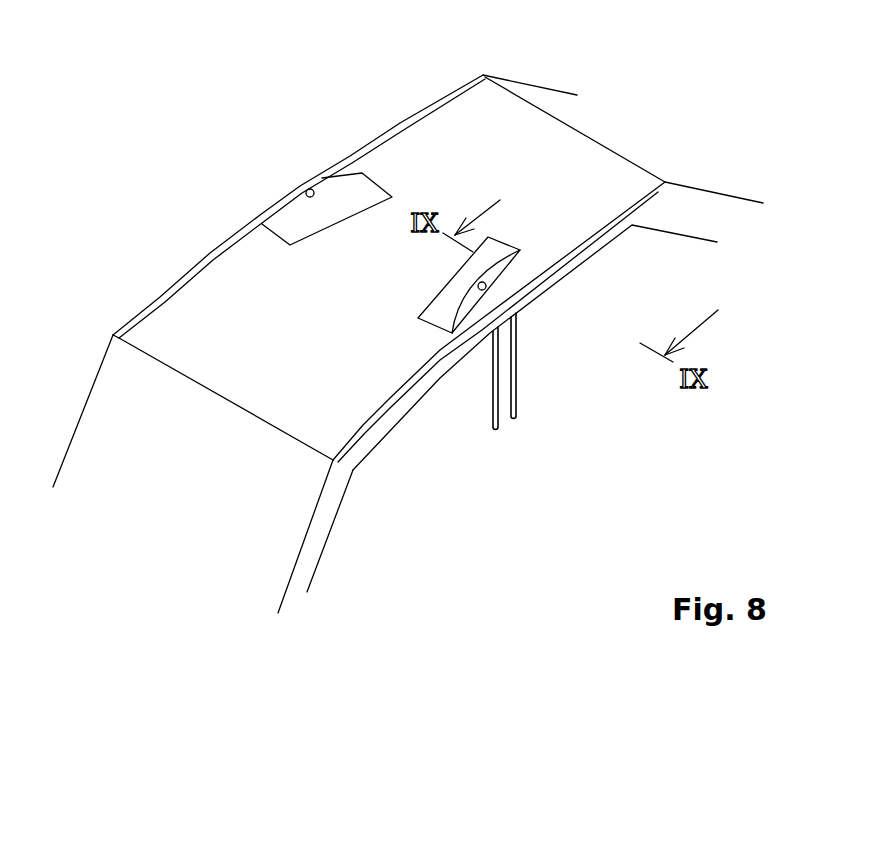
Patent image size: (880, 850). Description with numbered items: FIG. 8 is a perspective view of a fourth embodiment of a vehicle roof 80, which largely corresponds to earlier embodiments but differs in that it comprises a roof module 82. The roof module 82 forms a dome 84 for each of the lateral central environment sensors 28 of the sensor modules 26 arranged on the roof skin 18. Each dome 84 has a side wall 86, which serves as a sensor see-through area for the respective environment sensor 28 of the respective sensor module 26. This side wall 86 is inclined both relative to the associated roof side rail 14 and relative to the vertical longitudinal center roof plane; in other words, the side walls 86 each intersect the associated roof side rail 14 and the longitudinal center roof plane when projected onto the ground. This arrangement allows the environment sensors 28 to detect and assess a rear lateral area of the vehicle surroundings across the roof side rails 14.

The roof side rail 14 is at (150, 308).
The roof skin 18 is at (587, 165).
The sensor module 26 is at (394, 310).
The environment sensor 28 is at (304, 190).
The vehicle roof 80 is at (455, 72).
The roof module 82 is at (540, 145).
The dome 84 is at (347, 192).
The side wall 86 is at (500, 267).